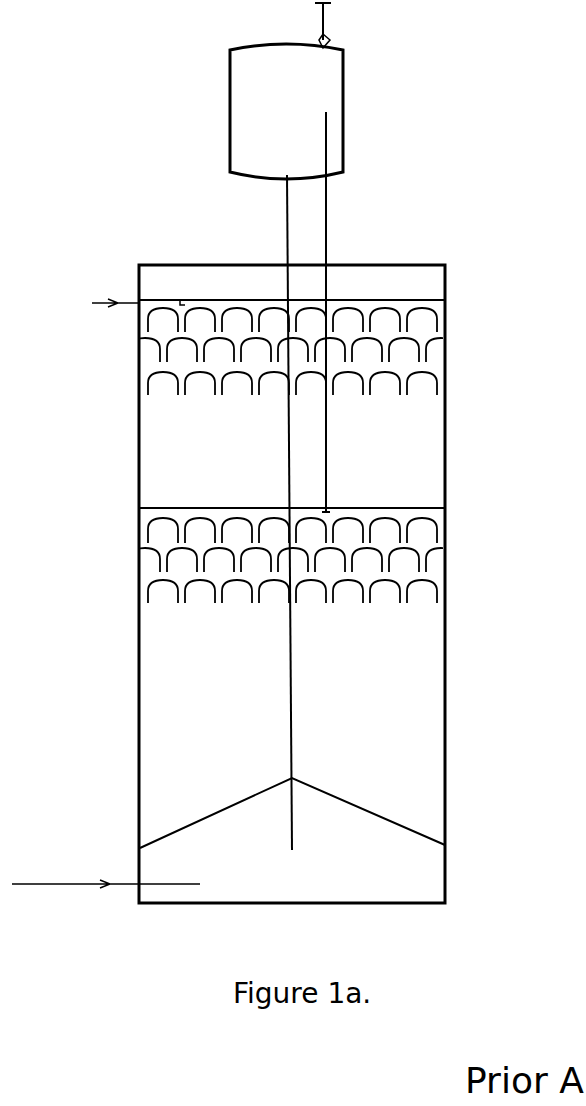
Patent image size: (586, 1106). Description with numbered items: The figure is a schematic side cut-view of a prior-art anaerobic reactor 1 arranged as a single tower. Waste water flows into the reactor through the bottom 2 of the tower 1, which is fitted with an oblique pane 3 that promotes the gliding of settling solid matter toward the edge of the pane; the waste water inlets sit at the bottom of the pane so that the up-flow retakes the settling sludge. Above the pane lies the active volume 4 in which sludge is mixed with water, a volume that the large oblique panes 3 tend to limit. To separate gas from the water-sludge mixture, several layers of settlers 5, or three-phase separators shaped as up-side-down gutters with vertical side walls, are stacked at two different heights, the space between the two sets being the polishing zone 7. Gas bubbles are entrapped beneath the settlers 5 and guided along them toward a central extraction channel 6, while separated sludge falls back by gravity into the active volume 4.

The anaerobic reactor 1 is at (299, 452).
The bottom 2 is at (432, 873).
The oblique pane 3 is at (385, 820).
The active volume 4 is at (385, 705).
The settlers 5 is at (420, 375).
The central extraction channel 6 is at (328, 235).
The polishing zone 7 is at (420, 460).